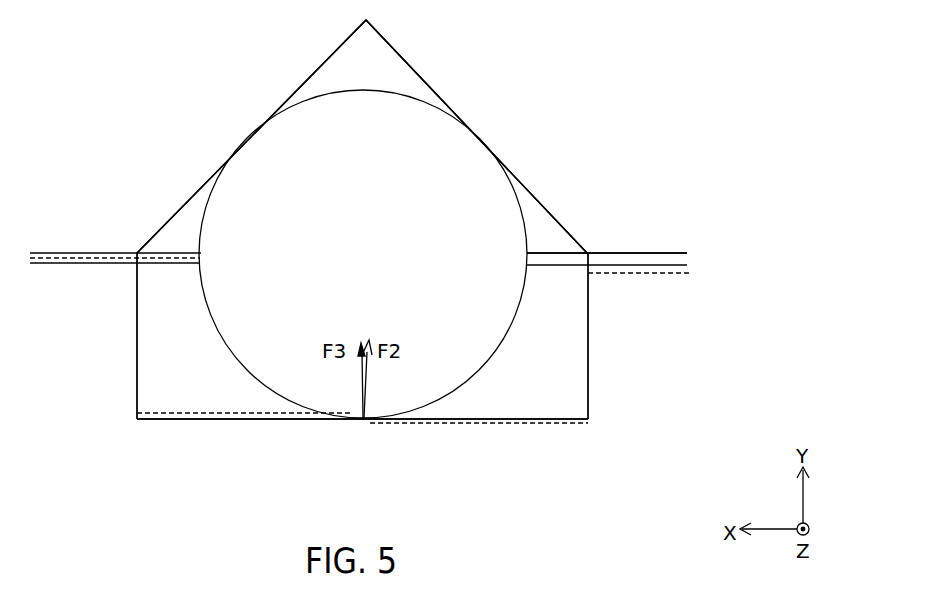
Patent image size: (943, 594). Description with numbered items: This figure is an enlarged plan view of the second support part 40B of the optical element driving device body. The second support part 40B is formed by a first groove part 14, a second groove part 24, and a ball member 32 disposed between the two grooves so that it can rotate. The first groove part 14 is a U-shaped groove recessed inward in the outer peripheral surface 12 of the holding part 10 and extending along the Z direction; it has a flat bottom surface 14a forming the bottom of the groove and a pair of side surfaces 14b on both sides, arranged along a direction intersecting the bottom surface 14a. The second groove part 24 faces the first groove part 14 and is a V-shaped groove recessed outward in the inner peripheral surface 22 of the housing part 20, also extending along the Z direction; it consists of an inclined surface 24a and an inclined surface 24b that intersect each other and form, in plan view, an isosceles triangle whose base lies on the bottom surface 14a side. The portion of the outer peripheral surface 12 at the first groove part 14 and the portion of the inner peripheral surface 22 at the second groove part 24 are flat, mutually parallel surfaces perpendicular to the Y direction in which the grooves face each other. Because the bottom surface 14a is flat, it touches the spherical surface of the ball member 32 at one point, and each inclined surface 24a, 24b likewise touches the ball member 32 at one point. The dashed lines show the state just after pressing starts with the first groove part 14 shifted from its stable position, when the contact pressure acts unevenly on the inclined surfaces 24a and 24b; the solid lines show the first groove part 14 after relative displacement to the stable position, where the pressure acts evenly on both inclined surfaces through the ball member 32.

The holding part 10 is at (94, 293).
The outer peripheral surface 12 is at (648, 267).
The first groove part 14 is at (195, 413).
The bottom surface 14a is at (528, 418).
The side surfaces 14b is at (137, 292).
The housing part 20 is at (94, 238).
The inner peripheral surface 22 is at (630, 253).
The second groove part 24 is at (362, 30).
The inclined surface 24a is at (568, 228).
The inclined surface 24b is at (158, 232).
The ball member 32 is at (338, 232).
The second support part 40B is at (522, 133).